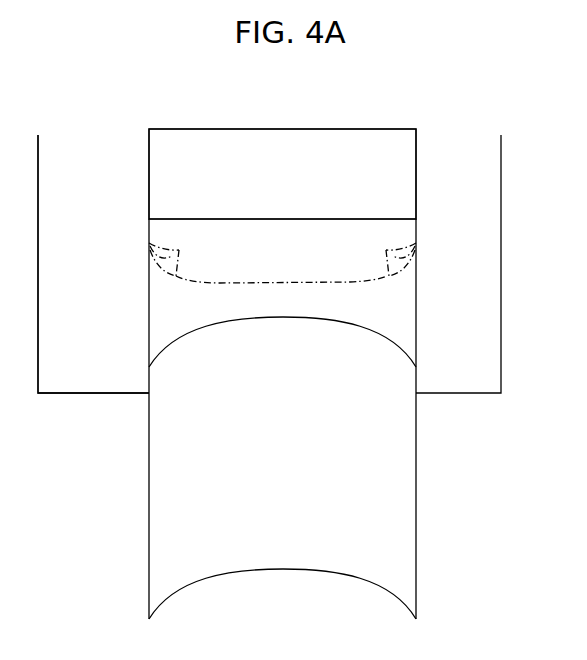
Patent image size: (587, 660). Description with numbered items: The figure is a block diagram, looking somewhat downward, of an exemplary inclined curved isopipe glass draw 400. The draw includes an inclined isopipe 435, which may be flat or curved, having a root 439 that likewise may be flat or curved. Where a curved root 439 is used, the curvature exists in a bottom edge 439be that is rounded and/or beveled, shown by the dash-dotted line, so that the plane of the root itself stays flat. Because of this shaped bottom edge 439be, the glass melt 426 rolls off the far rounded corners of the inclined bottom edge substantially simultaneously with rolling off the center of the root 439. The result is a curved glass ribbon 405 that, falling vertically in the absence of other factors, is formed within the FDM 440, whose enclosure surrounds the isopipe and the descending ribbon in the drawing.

The inclined curved isopipe glass draw 400 is at (300, 94).
The curved glass ribbon 405 is at (149, 448).
The glass melt 426 is at (149, 285).
The inclined isopipe 435 is at (149, 163).
The root 439 is at (282, 174).
The bottom edge 439be is at (358, 280).
The FDM 440 is at (68, 393).